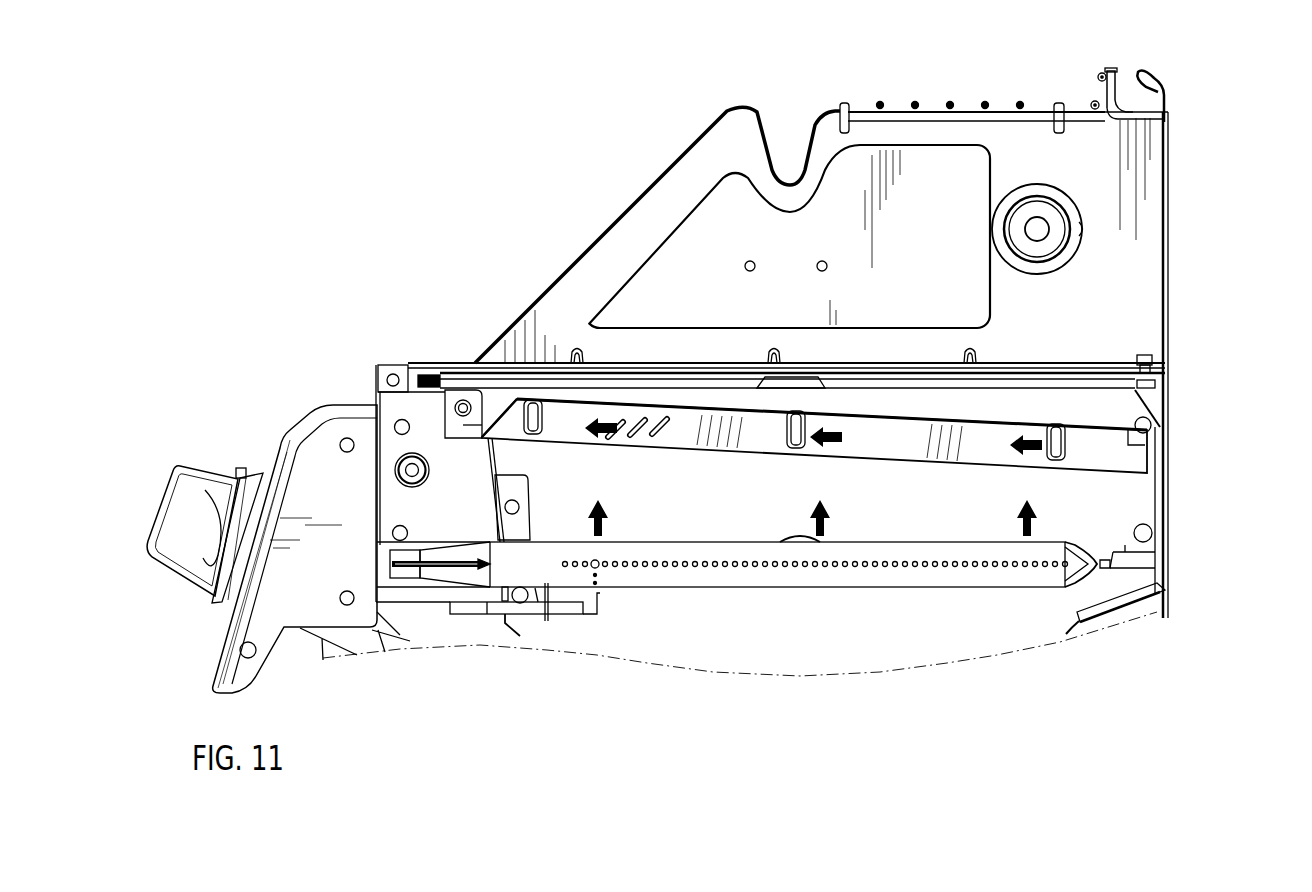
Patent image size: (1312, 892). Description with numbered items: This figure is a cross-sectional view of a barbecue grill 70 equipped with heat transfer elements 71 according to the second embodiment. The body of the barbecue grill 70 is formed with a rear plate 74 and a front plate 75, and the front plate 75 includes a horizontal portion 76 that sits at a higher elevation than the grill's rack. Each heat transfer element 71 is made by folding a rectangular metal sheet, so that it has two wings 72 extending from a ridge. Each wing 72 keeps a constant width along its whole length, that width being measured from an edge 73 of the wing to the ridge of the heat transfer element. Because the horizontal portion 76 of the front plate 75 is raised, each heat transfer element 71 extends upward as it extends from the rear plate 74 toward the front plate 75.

The barbecue grill 70 is at (1229, 67).
The heat transfer element 71 is at (560, 392).
The wing 72 is at (1095, 450).
The edge 73 is at (873, 462).
The rear plate 74 is at (1167, 540).
The front plate 75 is at (397, 365).
The horizontal portion 76 is at (467, 390).